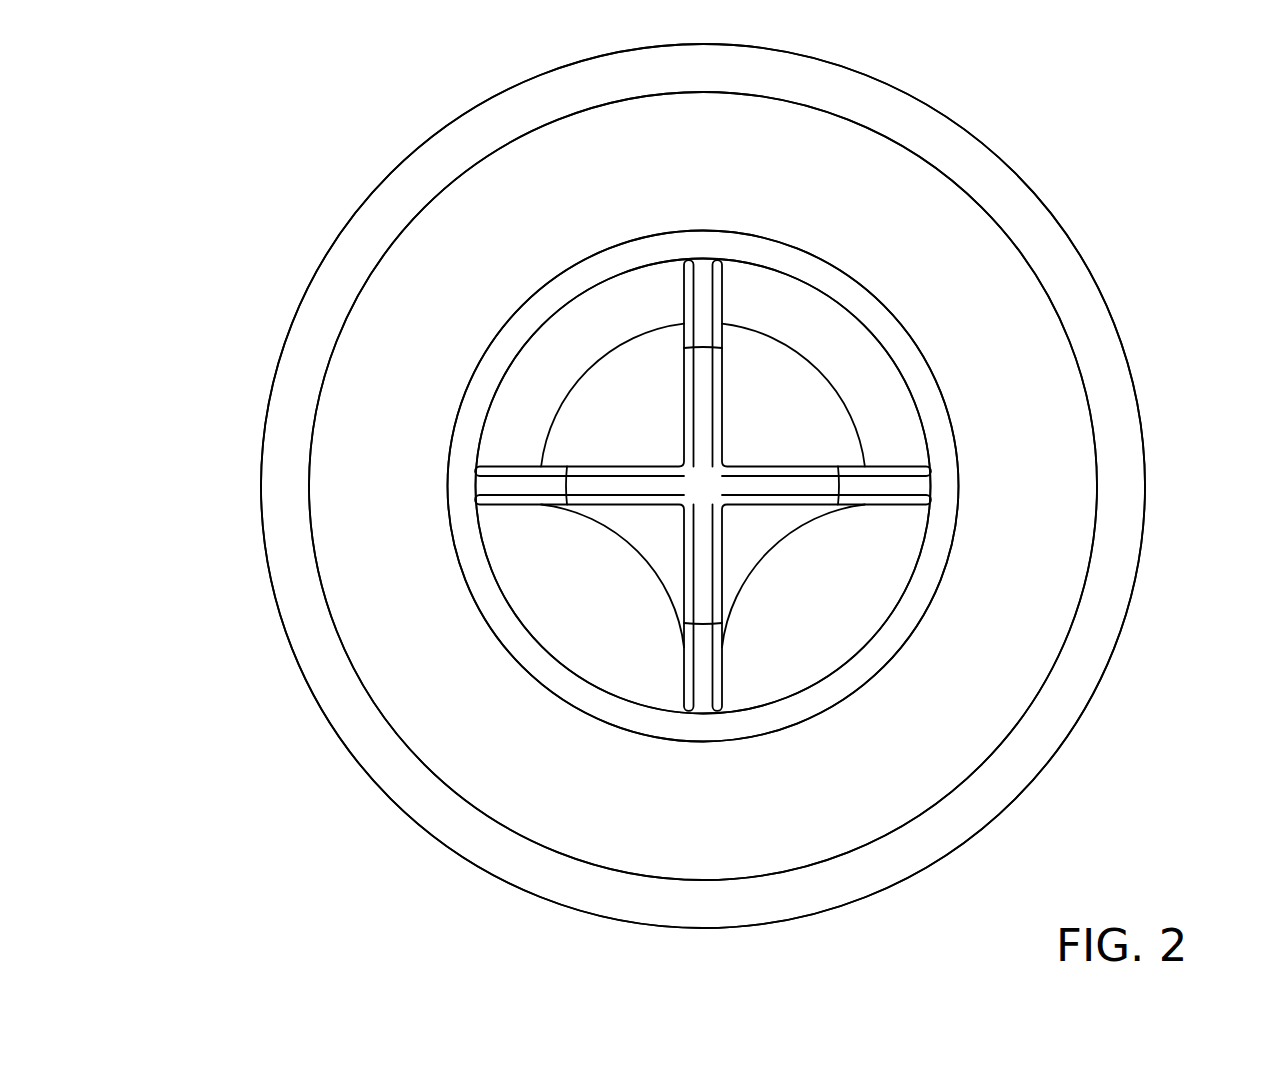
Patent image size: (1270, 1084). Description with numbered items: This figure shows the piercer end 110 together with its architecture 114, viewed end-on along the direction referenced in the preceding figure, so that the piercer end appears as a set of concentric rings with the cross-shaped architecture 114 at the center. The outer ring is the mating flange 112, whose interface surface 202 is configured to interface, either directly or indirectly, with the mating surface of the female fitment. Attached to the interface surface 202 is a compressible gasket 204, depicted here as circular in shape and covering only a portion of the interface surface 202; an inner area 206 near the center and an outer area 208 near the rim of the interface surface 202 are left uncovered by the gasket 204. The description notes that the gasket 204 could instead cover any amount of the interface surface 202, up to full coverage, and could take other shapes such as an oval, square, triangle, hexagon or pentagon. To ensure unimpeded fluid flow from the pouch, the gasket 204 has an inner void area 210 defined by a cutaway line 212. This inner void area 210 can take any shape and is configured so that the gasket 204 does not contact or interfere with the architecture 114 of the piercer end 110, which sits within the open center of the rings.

The piercer end 110 is at (703, 505).
The mating flange 112 is at (378, 187).
The architecture 114 is at (804, 481).
The interface surface 202 is at (942, 522).
The compressible gasket 204 is at (412, 595).
The inner area 206 is at (530, 322).
The outer area 208 is at (303, 527).
The inner void area 210 is at (775, 715).
The cutaway line 212 is at (647, 737).